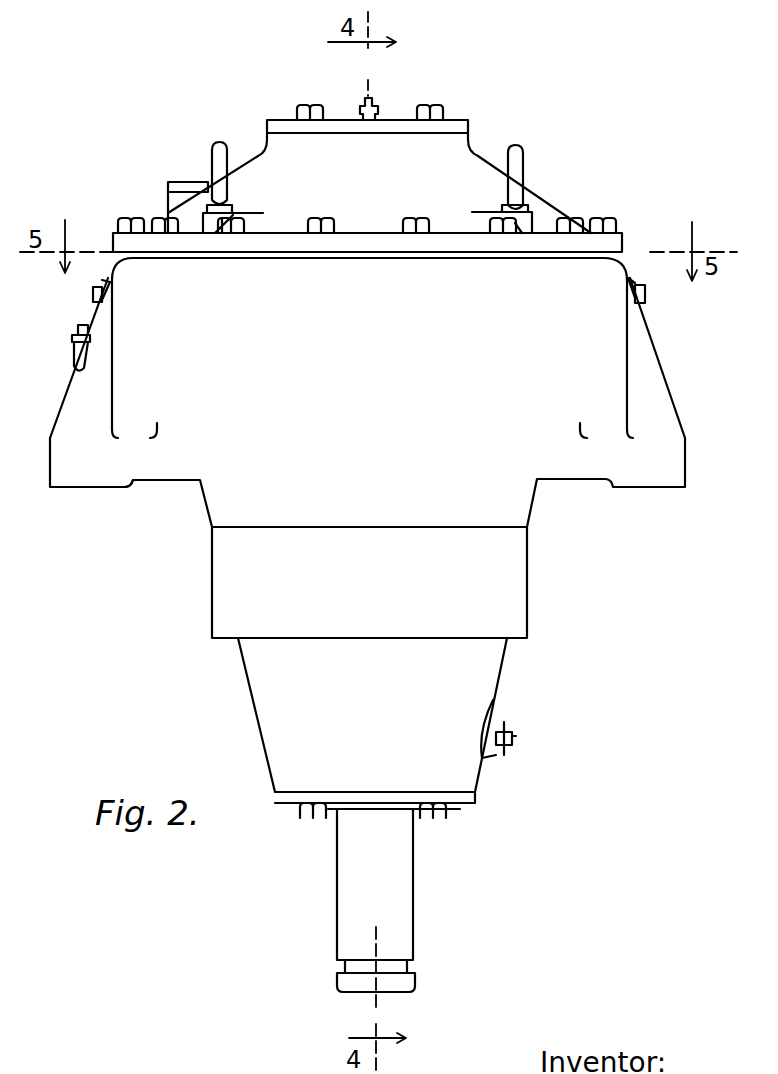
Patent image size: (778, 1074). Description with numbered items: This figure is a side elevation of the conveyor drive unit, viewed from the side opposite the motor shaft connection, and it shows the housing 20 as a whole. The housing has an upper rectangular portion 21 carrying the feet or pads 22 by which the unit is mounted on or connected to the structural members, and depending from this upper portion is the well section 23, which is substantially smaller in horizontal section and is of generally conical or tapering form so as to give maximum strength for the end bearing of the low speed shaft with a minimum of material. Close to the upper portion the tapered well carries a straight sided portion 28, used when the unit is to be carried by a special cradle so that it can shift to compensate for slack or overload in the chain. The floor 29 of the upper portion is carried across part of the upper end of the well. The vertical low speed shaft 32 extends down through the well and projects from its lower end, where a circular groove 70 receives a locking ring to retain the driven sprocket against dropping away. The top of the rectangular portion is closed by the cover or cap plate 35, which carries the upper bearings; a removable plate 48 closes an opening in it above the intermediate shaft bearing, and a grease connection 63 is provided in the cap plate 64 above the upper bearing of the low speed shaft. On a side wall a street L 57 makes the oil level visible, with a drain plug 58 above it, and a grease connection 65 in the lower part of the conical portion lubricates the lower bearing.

The housing 20 is at (372, 348).
The upper rectangular portion 21 is at (588, 348).
The feet or pads 22 is at (85, 487).
The well section 23 is at (372, 728).
The straight sided portion 28 is at (530, 605).
The floor 29 is at (158, 480).
The low speed shaft 32 is at (415, 868).
The cover or cap plate 35 is at (379, 183).
The removable plate 48 is at (180, 188).
The street L 57 is at (75, 357).
The drain plug 58 is at (93, 295).
The grease connection 63 is at (365, 104).
The cap plate 64 is at (447, 130).
The grease connection 65 is at (512, 738).
The circular groove 70 is at (410, 966).